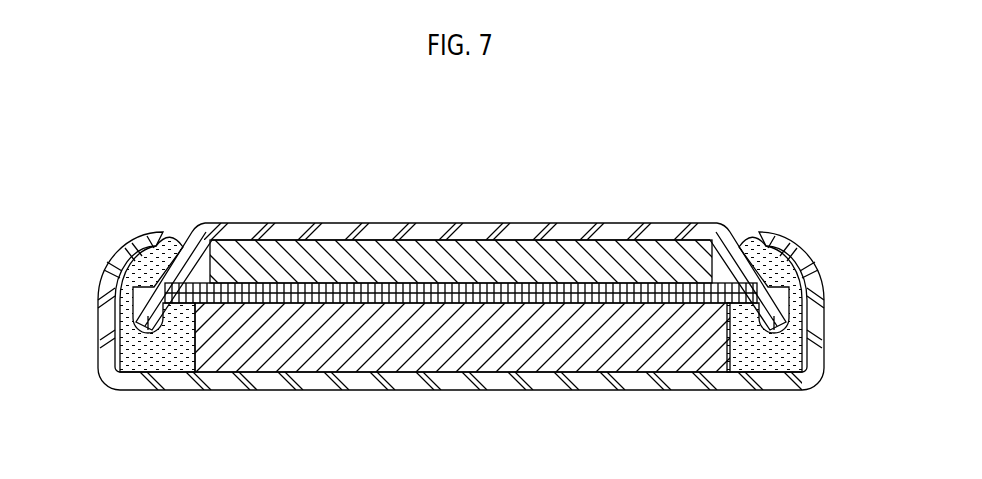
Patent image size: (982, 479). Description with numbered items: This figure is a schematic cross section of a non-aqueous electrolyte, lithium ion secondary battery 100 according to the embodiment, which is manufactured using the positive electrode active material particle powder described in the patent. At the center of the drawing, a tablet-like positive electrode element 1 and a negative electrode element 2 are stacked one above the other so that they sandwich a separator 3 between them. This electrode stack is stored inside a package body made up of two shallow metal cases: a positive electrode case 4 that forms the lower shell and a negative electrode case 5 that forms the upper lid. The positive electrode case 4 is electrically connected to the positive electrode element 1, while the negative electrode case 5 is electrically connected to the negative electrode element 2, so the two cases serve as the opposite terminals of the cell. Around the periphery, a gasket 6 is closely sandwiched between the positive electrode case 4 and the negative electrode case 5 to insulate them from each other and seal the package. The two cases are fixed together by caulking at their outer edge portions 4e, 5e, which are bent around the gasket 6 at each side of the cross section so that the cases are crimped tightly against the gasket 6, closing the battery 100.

The lithium ion secondary battery 100 is at (686, 188).
The positive electrode element 1 is at (490, 357).
The negative electrode element 2 is at (502, 255).
The separator 3 is at (388, 293).
The positive electrode case 4 is at (583, 378).
The outer edge portion of positive electrode case 4e is at (116, 249).
The negative electrode case 5 is at (389, 232).
The outer edge portion of negative electrode case 5e is at (134, 315).
The gasket 6 is at (153, 360).